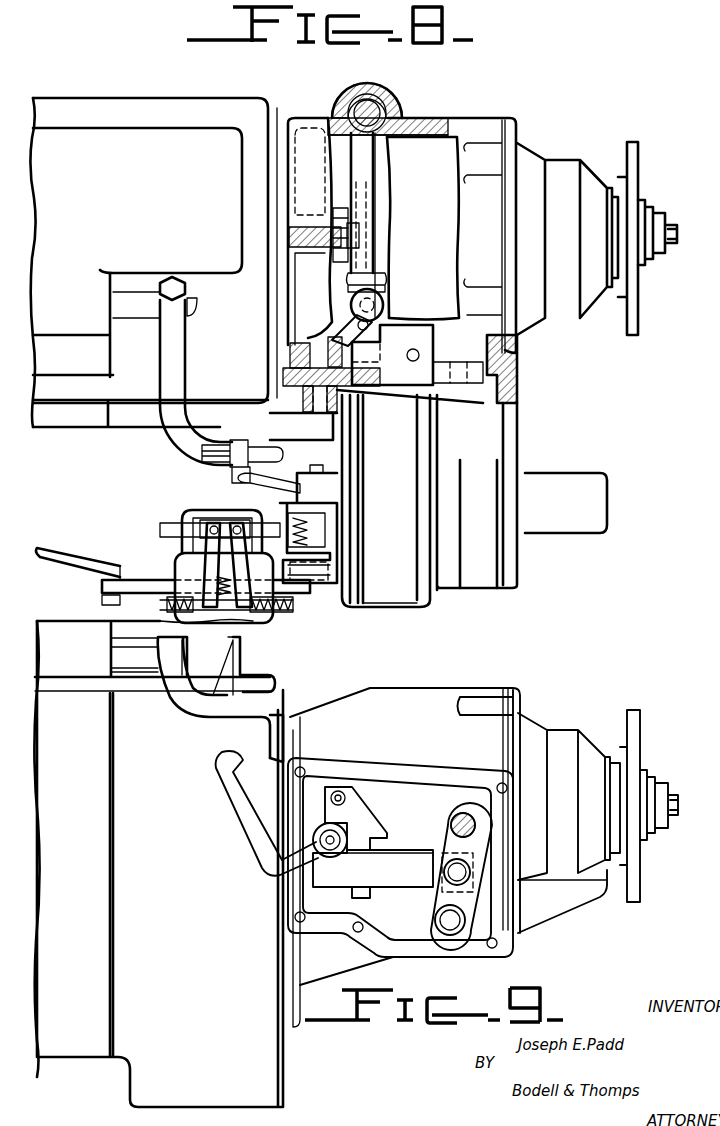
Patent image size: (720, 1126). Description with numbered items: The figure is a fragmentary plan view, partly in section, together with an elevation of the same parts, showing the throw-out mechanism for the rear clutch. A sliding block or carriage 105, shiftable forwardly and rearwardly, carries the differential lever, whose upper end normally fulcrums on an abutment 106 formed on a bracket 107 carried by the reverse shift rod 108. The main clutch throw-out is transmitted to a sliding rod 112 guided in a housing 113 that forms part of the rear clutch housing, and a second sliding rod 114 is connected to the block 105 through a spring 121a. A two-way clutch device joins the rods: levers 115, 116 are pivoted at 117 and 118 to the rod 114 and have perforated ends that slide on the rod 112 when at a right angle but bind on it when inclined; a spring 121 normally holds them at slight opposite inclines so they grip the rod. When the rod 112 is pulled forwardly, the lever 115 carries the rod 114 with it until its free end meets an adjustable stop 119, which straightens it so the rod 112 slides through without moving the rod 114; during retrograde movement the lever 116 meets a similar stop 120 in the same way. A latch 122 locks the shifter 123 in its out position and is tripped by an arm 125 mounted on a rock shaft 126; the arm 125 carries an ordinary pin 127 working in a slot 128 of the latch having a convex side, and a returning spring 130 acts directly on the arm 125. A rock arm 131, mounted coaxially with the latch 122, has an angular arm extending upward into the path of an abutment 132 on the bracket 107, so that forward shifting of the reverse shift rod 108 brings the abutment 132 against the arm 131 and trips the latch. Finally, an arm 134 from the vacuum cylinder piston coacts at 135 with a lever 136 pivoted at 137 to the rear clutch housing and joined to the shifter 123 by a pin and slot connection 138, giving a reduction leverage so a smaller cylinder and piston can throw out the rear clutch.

In FIG. 8, the sliding block or carriage 105 is at (325, 508).
In FIG. 9, the abutment 106 is at (252, 682).
In FIG. 9, the bracket 107 is at (180, 698).
In FIG. 8, the reverse shift rod 108 is at (127, 298).
In FIG. 9, the reverse shift rod 108 is at (130, 655).
In FIG. 8, the sliding part or rod 112 is at (150, 582).
In FIG. 8, the housing 113 is at (183, 563).
In FIG. 8, the second sliding part or rod 114 is at (172, 523).
In FIG. 8, the clutch lever 115 is at (200, 540).
In FIG. 8, the clutch lever 116 is at (245, 620).
In FIG. 8, the pivot 117 is at (214, 525).
In FIG. 8, the pivot 118 is at (237, 525).
In FIG. 8, the adjustable stop 119 is at (167, 606).
In FIG. 8, the stop 120 is at (283, 607).
In FIG. 8, the spring 121 is at (227, 600).
In FIG. 8, the spring 121a is at (305, 525).
In FIG. 9, the latch 122 is at (367, 822).
In FIG. 8, the shifter 123 is at (398, 325).
In FIG. 9, the shifter 123 is at (400, 857).
In FIG. 8, the arm 125 is at (372, 240).
In FIG. 8, the rock shaft 126 is at (380, 112).
In FIG. 8, the pin 127 is at (300, 364).
In FIG. 9, the pin 127 is at (345, 793).
In FIG. 8, the slot 128 is at (300, 355).
In FIG. 9, the slot 128 is at (340, 795).
In FIG. 8, the returning spring 130 is at (290, 243).
In FIG. 9, the rock arm 131 is at (240, 805).
In FIG. 9, the abutment 132 is at (265, 736).
In FIG. 8, the arm 134 is at (478, 392).
In FIG. 9, the arm 134 is at (470, 821).
In FIG. 9, the coacting point 135 is at (460, 821).
In FIG. 9, the lever 136 is at (465, 900).
In FIG. 9, the pivot 137 is at (450, 923).
In FIG. 9, the pin and slot connection 138 is at (455, 875).